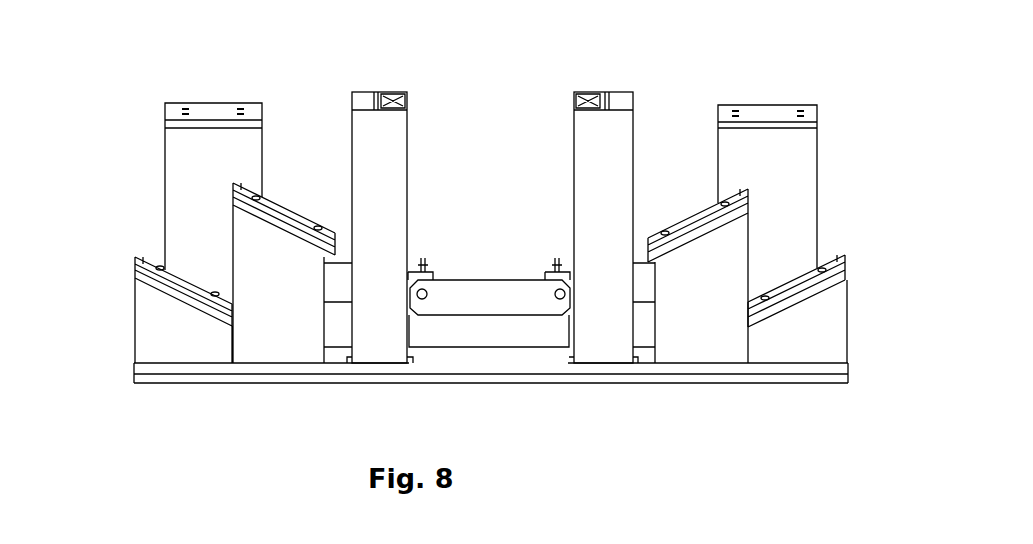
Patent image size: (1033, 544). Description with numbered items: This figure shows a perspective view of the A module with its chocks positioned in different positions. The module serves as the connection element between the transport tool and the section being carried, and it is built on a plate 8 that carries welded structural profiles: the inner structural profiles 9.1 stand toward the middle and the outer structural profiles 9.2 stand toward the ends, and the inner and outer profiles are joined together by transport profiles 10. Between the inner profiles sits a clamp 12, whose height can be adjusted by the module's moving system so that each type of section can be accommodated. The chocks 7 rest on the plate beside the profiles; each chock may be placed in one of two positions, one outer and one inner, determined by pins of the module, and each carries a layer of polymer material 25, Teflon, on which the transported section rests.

The outer structural profile 9.2 is at (205, 162).
The inner structural profile 9.1 is at (597, 202).
The layer of polymer material 25 is at (740, 190).
The chock 7 is at (702, 312).
The transport profile 10 is at (335, 285).
The plate 8 is at (432, 365).
The clamp 12 is at (475, 298).